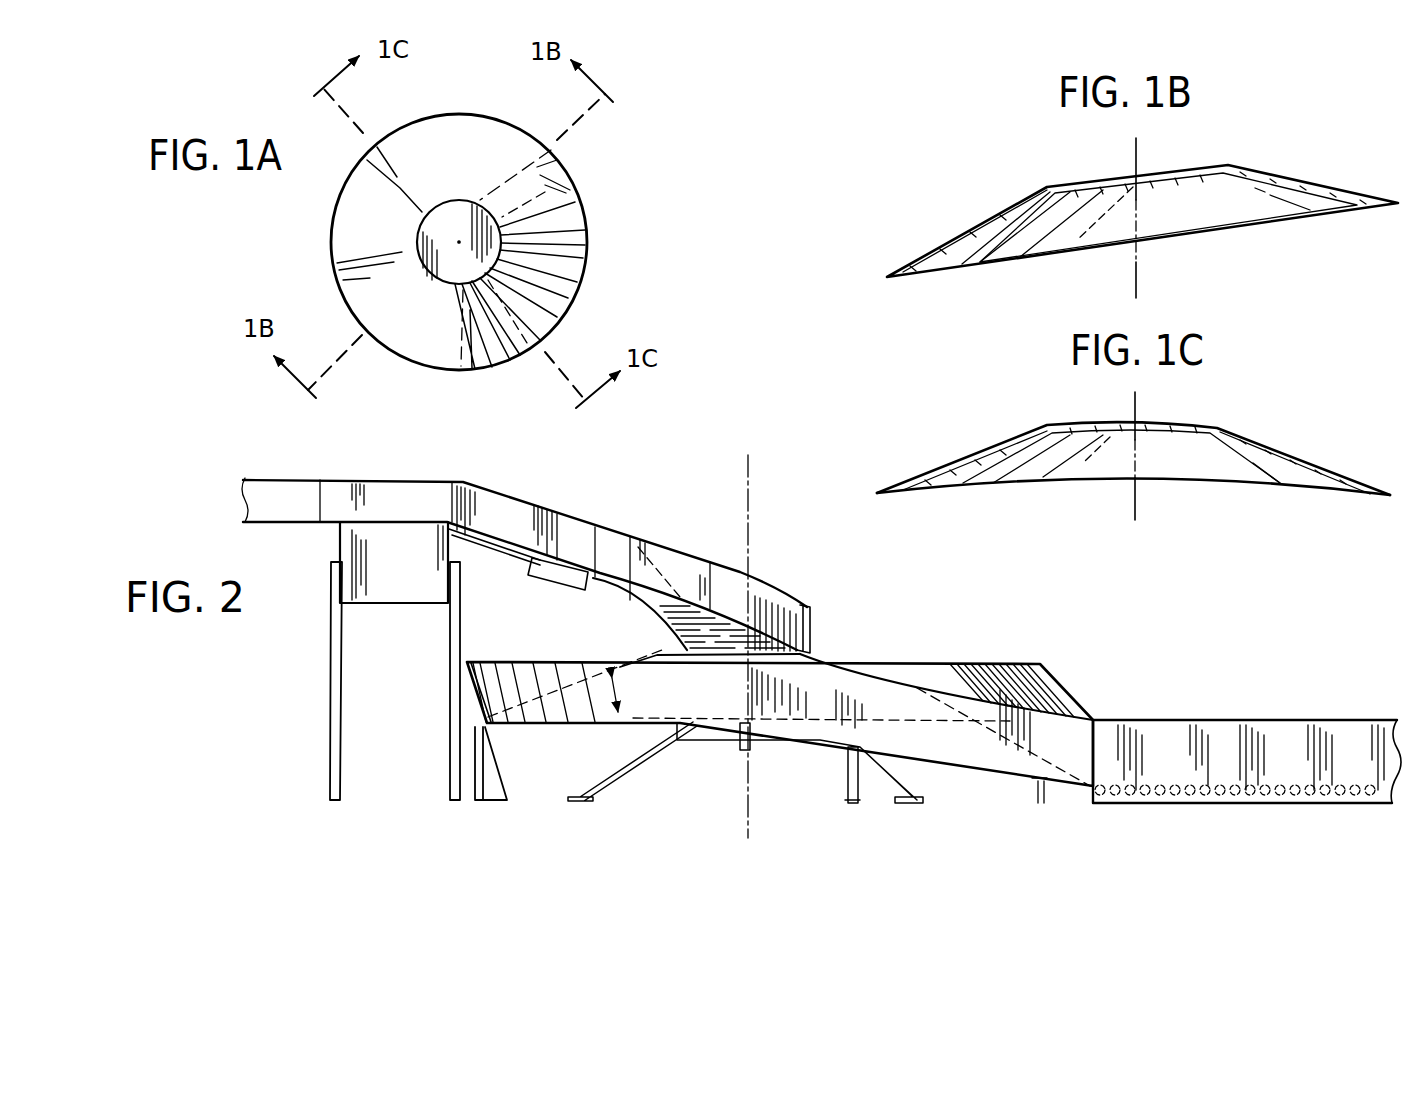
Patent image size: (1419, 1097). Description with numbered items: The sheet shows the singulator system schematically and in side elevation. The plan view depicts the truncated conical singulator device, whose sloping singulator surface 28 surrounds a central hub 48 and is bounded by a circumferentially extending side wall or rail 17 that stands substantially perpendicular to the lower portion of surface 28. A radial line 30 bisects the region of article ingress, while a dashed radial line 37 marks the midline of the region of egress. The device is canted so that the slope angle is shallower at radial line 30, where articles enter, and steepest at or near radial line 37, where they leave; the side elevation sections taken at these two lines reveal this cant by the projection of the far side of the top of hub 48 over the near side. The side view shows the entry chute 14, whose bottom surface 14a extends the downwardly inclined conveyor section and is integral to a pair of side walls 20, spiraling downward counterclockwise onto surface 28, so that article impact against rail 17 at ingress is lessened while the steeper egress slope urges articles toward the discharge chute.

In FIG. 2, the entry chute 14 is at (585, 520).
In FIG. 2, the bottom surface 14a is at (643, 600).
In FIG. 2, the side wall or rail 17 is at (1050, 680).
In FIG. 2, the side walls 20 is at (767, 583).
In FIG. 1B, the sloping singulator surface 28 is at (1213, 212).
In FIG. 1C, the sloping singulator surface 28 is at (1198, 467).
In FIG. 2, the sloping singulator surface 28 is at (883, 680).
In FIG. 1A, the radial line 30 is at (535, 167).
In FIG. 1B, the radial line 30 is at (1138, 149).
In FIG. 1A, the radial line 37 is at (513, 313).
In FIG. 1C, the radial line 37 is at (1137, 407).
In FIG. 1A, the hub 48 is at (583, 255).